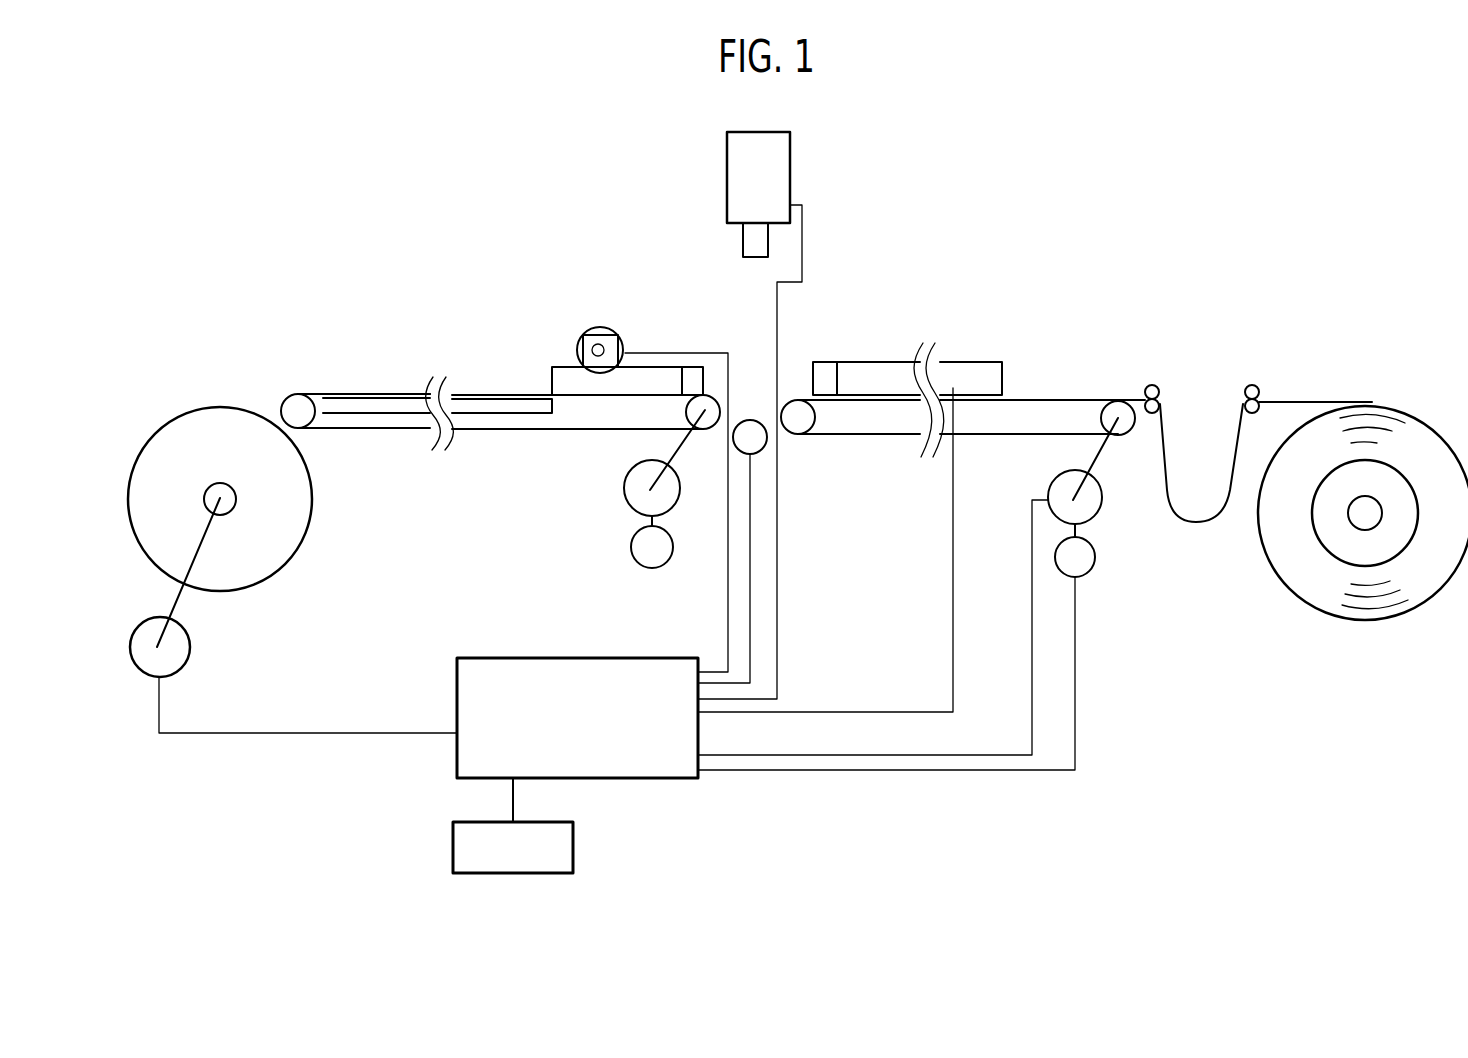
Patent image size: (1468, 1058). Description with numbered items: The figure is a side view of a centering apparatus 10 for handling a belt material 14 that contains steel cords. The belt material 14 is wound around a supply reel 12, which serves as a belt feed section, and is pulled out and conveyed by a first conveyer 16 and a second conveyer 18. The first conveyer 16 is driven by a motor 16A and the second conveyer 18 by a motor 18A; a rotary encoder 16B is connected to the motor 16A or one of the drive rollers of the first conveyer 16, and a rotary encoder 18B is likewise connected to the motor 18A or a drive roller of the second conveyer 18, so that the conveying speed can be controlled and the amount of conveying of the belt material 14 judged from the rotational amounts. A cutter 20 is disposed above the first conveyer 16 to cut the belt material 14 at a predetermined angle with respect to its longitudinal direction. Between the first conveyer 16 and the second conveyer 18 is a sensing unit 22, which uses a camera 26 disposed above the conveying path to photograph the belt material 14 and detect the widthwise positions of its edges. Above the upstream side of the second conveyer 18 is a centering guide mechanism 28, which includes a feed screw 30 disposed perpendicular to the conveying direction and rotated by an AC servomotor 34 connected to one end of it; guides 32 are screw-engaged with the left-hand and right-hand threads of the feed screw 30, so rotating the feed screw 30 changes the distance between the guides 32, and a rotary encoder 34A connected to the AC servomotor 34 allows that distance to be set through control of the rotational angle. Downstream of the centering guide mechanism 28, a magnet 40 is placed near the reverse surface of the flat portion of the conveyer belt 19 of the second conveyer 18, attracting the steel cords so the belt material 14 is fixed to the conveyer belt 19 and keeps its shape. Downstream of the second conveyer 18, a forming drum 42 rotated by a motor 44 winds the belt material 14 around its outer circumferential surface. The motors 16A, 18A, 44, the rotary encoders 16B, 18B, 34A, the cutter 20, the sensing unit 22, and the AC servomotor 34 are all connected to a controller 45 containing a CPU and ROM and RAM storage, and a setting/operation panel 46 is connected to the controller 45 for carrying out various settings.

The centering apparatus 10 is at (857, 185).
The supply reel 12 is at (1330, 557).
The belt material 14 is at (1298, 402).
The first conveyer 16 is at (1028, 437).
The motor 16A is at (1100, 492).
The rotary encoder 16B is at (1093, 565).
The second conveyer 18 is at (566, 431).
The motor 18A is at (633, 504).
The rotary encoder 18B is at (656, 566).
The conveyer belt 19 is at (481, 393).
The cutter 20 is at (975, 363).
The sensing unit 22 is at (797, 157).
The camera 26 is at (727, 132).
The centering guide mechanism 28 is at (589, 318).
The feed screw 30 is at (581, 339).
The guides 32 is at (658, 365).
The AC servomotor 34 is at (694, 469).
The rotary encoder 34A is at (621, 343).
The magnet 40 is at (480, 430).
The forming drum 42 is at (308, 534).
The motor 44 is at (189, 660).
The controller 45 is at (700, 740).
The setting/operation panel 46 is at (575, 850).